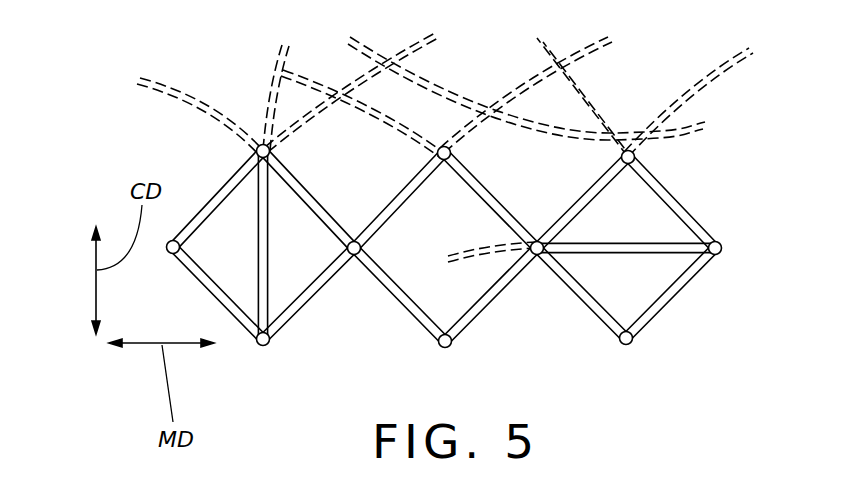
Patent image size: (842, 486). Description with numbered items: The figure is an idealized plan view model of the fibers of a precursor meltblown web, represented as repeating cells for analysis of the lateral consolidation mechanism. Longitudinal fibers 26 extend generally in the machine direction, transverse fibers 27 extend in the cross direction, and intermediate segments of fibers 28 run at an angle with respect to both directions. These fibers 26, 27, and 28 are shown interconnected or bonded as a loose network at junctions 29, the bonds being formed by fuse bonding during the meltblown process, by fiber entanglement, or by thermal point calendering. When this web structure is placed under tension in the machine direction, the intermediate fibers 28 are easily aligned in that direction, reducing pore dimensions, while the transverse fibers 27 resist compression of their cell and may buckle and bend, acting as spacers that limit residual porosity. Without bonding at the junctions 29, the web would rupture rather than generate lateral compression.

The longitudinal fibers 26 is at (666, 243).
The transverse fibers 27 is at (260, 213).
The intermediate segments of fibers 28 is at (413, 303).
The junctions 29 is at (270, 342).